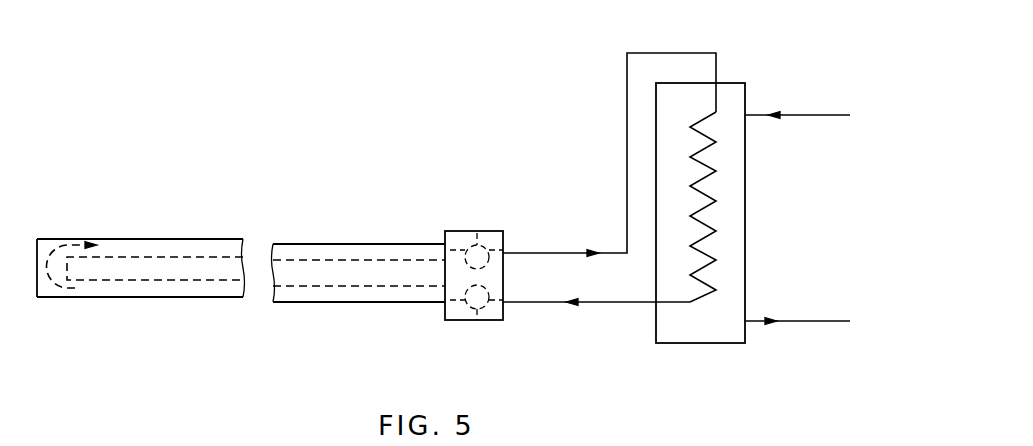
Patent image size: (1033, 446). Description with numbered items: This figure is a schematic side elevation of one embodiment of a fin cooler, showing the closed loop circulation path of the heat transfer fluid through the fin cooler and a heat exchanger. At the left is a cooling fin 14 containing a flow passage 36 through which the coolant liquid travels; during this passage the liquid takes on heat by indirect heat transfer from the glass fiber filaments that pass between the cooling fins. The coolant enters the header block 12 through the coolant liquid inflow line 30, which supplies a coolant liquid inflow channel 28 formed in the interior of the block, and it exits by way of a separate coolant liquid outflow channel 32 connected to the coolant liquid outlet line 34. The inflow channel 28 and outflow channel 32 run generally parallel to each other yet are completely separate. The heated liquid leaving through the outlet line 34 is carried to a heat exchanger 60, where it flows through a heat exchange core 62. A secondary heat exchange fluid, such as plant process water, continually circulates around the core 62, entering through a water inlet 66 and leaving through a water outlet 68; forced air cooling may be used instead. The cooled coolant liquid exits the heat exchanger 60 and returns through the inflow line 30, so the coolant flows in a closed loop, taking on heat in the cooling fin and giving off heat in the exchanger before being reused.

The header block 12 is at (454, 224).
The cooling fin 14 is at (167, 233).
The coolant liquid inflow channel 28 is at (477, 322).
The coolant liquid inflow line 30 is at (530, 303).
The coolant liquid outflow channel 32 is at (478, 231).
The coolant liquid outlet line 34 is at (535, 252).
The flow passage 36 is at (164, 289).
The heat exchanger 60 is at (742, 69).
The heat exchange core 62 is at (707, 202).
The water inlet 66 is at (805, 114).
The water outlet 68 is at (805, 320).